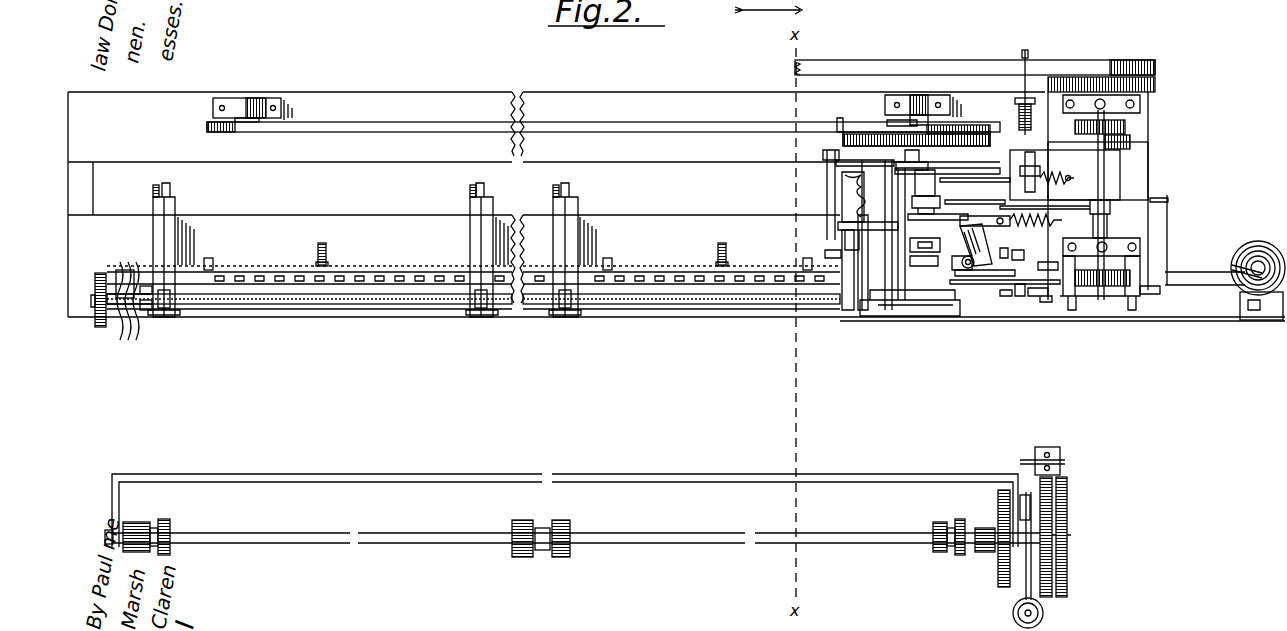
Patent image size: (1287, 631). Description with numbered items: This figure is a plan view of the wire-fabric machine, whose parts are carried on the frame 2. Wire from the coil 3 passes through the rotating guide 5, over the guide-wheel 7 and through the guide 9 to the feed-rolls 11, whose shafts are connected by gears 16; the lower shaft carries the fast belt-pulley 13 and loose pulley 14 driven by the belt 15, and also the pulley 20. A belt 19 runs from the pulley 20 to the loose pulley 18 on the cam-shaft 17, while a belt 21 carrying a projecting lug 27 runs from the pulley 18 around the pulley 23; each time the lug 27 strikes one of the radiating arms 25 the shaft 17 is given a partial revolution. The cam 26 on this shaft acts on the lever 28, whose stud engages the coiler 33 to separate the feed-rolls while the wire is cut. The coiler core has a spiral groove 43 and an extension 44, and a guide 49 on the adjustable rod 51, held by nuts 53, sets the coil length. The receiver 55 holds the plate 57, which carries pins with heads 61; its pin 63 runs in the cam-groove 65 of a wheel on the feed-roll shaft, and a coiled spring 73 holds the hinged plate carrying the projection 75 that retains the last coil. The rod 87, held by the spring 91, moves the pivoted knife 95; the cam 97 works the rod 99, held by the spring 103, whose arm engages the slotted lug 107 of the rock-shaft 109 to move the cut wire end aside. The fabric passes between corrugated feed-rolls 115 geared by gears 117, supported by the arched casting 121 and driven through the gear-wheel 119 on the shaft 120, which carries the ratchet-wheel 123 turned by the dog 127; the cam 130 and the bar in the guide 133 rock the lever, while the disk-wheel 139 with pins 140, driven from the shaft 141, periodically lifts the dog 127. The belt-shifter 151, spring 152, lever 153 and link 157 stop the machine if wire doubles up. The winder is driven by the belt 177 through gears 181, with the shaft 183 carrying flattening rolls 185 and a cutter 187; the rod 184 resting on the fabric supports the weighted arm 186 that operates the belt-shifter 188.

The frame 2 is at (705, 315).
The coil of wire 3 is at (1258, 262).
The rotating guide 5 is at (1232, 265).
The guide-wheel 7 is at (1235, 286).
The guide 9 is at (1146, 292).
The feed-rolls 11 is at (1088, 288).
The belt-pulley 13 is at (1160, 53).
The loose pulley 14 is at (1155, 84).
The belt 15 is at (1036, 68).
The gears 16 is at (1128, 124).
The shaft 17 is at (925, 168).
The loose pulley 18 is at (958, 128).
The belt 19 is at (988, 140).
The pulley 20 is at (1118, 148).
The belt 21 is at (700, 128).
The pulley 23 is at (240, 132).
The radiating arms 25 is at (886, 112).
The cam 26 is at (935, 220).
The projecting lug 27 is at (838, 120).
The lever 28 is at (1000, 210).
The coiler 33 is at (1110, 208).
The groove 43 is at (972, 272).
The extension 44 is at (985, 283).
The guide 49 is at (1020, 296).
The adjustable rod 51 is at (1050, 296).
The nuts 53 is at (1003, 296).
The rail 55 is at (286, 270).
The plate 57 is at (116, 268).
The heads 61 is at (245, 270).
The pin 63 is at (130, 268).
The cam-groove 65 is at (132, 338).
The coiled spring 73 is at (327, 248).
The projection 75 is at (655, 270).
The rod 87 is at (968, 250).
The spring 91 is at (1040, 222).
The pivoted knife 95 is at (1002, 250).
The cam 97 is at (905, 164).
The rod 99 is at (995, 196).
The spring 103 is at (1052, 180).
The slotted lug 107 is at (938, 186).
The rock-shaft 109 is at (942, 202).
The corrugated feed-rolls 115 is at (918, 312).
The gears 117 is at (146, 312).
The gear-wheel 119 is at (100, 272).
The shaft 120 is at (780, 300).
The arched casting 121 is at (178, 233).
The ratchet-wheel 123 is at (850, 312).
The dog 127 is at (826, 254).
The cam 130 is at (962, 262).
The guide 133 is at (910, 252).
The disk-wheel 139 is at (832, 192).
The pins 140 is at (827, 152).
The shaft 141 is at (846, 202).
The belt-shifter 151 is at (1024, 80).
The spring 152 is at (1031, 112).
The lever 153 is at (1022, 256).
The link 157 is at (1033, 172).
The belt 177 is at (1062, 596).
The gears 181 is at (1000, 575).
The shaft 183 is at (868, 544).
The rod 184 is at (668, 482).
The guide or flattening rolls 185 is at (168, 528).
The weighted arm 186 is at (1022, 590).
The cutter 187 is at (558, 522).
The belt-shifter 188 is at (1058, 462).